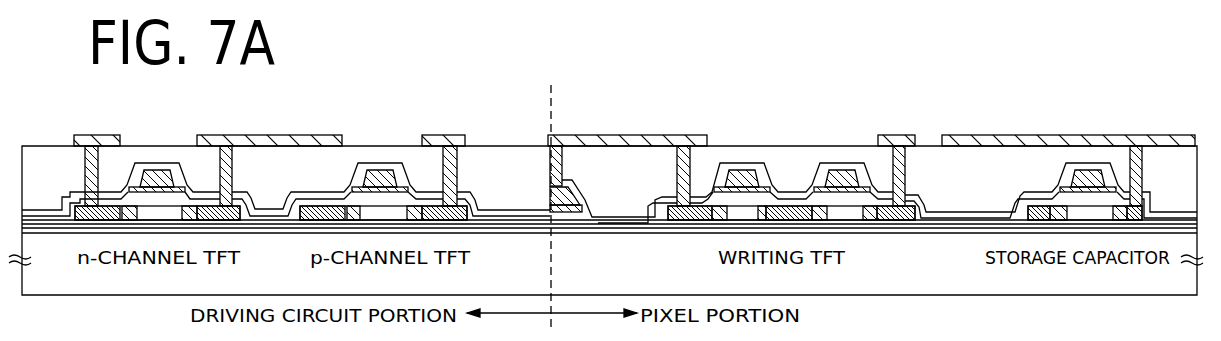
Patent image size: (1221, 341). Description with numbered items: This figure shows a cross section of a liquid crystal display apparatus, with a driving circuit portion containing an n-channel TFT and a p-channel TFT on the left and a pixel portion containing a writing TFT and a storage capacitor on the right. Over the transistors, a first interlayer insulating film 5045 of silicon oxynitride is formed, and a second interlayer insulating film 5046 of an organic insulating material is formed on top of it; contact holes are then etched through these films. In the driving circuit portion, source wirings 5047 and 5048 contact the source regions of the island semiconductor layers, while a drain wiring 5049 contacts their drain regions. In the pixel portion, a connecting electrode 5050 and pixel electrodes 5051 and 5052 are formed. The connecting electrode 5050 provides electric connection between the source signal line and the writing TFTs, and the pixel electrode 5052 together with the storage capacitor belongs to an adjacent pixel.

The source wiring 5047 is at (85, 143).
The drain wiring 5049 is at (285, 142).
The source wiring 5048 is at (440, 143).
The connecting electrode 5050 is at (592, 142).
The first interlayer insulating film 5045 is at (752, 162).
The second interlayer insulating film 5046 is at (830, 162).
The pixel electrode 5051 is at (898, 143).
The pixel electrode 5052 is at (1083, 142).